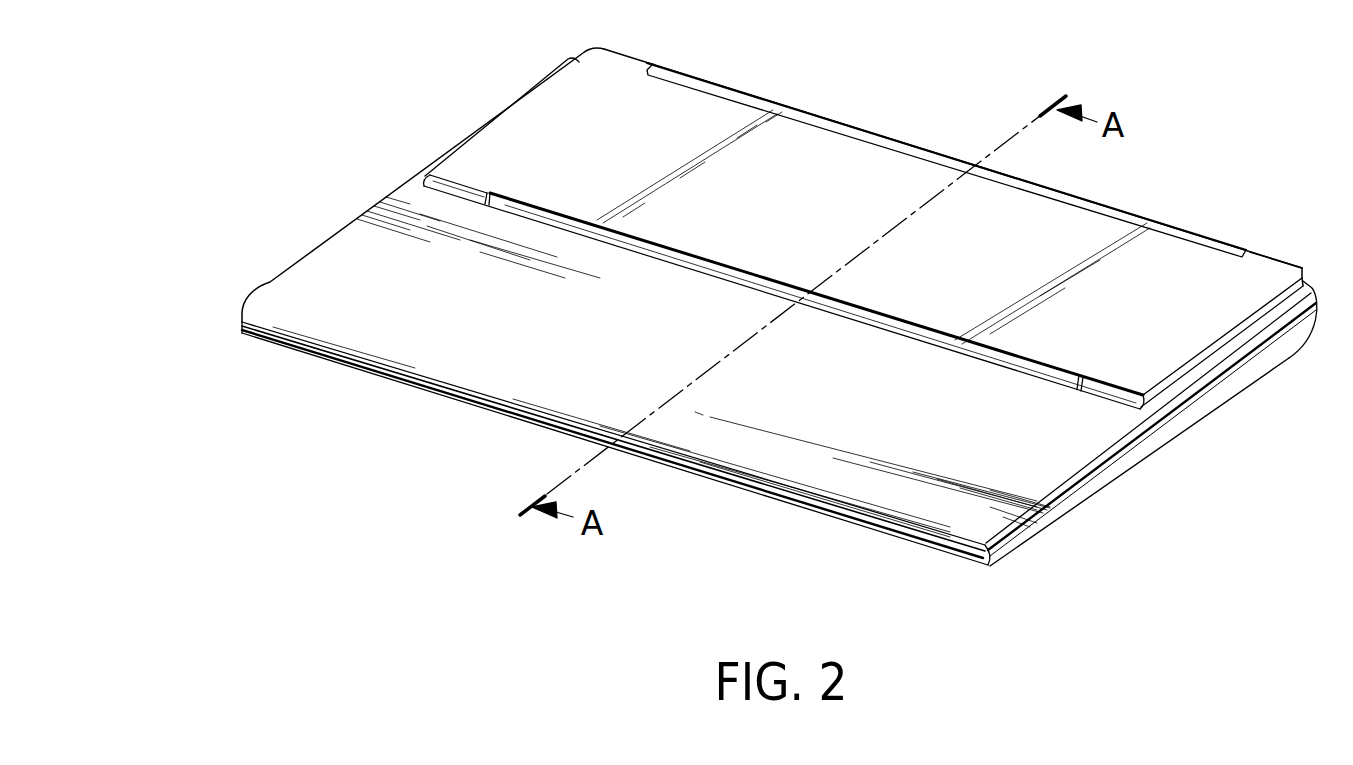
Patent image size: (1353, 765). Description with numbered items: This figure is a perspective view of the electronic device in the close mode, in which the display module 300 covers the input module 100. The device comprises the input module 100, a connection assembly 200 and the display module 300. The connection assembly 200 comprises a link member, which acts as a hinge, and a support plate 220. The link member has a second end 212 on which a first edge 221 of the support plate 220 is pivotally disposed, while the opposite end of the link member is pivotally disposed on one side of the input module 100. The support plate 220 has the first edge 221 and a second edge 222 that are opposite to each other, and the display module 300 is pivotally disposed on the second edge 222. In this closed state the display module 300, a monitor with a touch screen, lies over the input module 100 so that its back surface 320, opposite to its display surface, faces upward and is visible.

The input module 100 is at (1061, 518).
The connection assembly 200 is at (894, 128).
The second end 212 is at (812, 120).
The support plate 220 is at (1154, 293).
The first edge 221 is at (1268, 262).
The second edge 222 is at (1122, 394).
The display module 300 is at (328, 276).
The back surface 320 is at (390, 273).